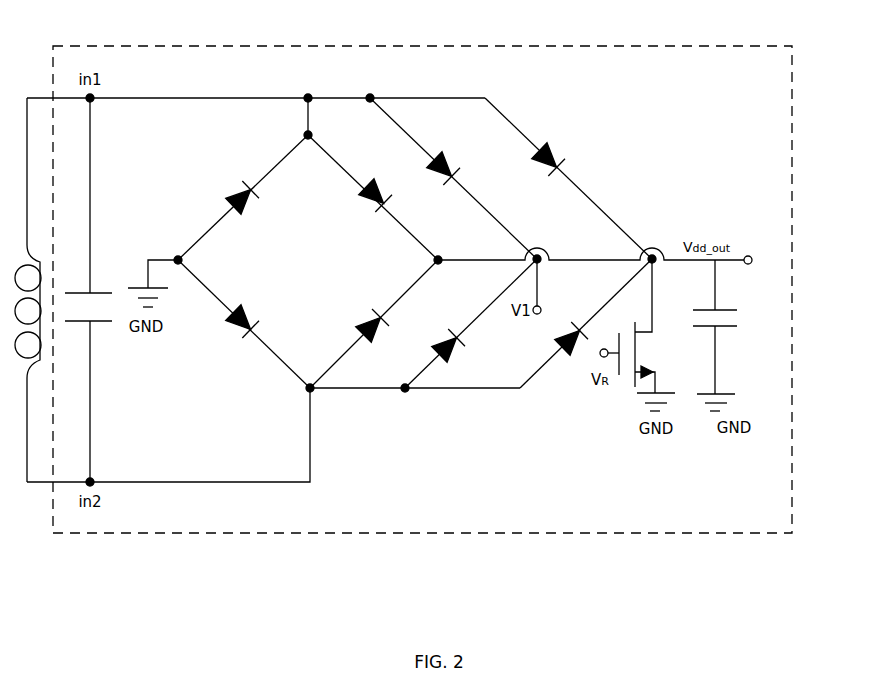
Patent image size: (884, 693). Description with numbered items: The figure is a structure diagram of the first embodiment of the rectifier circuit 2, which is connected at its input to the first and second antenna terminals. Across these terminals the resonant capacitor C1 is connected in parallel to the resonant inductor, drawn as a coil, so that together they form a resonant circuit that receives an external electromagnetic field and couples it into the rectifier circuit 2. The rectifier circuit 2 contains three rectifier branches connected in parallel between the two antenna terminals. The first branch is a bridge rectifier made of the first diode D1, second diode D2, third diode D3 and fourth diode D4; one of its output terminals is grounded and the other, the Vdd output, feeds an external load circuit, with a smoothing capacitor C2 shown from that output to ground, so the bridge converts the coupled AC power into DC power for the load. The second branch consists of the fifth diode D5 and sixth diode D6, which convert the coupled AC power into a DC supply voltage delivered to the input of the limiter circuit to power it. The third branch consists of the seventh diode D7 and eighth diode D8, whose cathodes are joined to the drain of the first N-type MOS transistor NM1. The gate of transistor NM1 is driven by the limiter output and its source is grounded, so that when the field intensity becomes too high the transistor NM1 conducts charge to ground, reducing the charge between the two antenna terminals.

The rectifier circuit 2 is at (773, 192).
The first diode D1 is at (243, 197).
The second diode D2 is at (244, 324).
The third diode D3 is at (374, 324).
The fourth diode D4 is at (373, 197).
The fifth diode D5 is at (453, 178).
The sixth diode D6 is at (471, 323).
The seventh diode D7 is at (568, 178).
The eighth diode D8 is at (586, 323).
The resonant capacitor C1 is at (88, 290).
The capacitor C2 is at (729, 327).
The first N-type MOS transistor NM1 is at (643, 326).